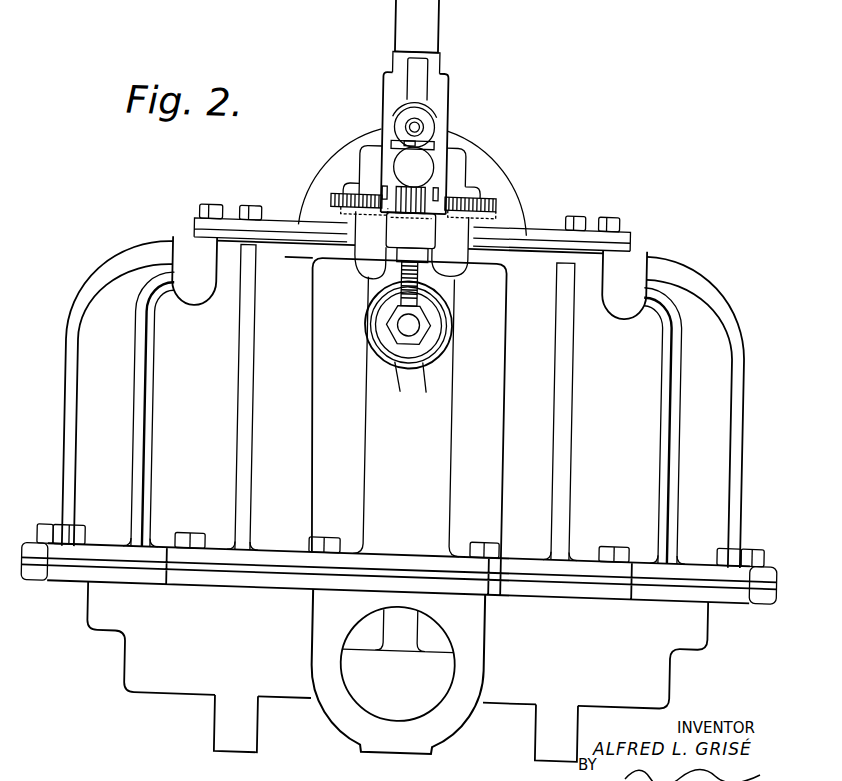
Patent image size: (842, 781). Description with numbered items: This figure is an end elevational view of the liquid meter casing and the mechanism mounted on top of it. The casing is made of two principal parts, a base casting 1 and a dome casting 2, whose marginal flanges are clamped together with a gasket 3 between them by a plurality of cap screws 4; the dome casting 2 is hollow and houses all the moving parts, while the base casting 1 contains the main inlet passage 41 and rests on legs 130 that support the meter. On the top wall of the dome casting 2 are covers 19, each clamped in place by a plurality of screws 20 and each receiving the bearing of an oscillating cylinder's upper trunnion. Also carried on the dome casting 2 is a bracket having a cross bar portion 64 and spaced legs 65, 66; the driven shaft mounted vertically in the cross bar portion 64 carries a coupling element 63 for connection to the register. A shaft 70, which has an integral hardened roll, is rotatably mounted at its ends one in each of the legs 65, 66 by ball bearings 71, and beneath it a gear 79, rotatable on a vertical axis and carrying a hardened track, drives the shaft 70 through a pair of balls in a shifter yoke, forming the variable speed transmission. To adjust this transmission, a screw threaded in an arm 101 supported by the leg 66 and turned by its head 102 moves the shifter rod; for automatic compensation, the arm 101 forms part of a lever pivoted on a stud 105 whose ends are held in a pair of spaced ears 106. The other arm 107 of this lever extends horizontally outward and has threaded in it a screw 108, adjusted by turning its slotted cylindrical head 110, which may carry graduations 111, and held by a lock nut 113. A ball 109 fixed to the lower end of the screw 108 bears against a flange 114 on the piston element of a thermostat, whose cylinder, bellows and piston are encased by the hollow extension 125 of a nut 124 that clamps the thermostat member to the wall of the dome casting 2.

The base casting 1 is at (703, 629).
The dome casting 2 is at (728, 386).
The gasket 3 is at (787, 578).
The cap screws 4 is at (324, 543).
The cover 19 is at (201, 229).
The screws 20 is at (254, 209).
The main inlet passage 41 is at (397, 672).
The coupling element 63 is at (406, 20).
The cross bar portion 64 is at (434, 67).
The leg 65 is at (355, 159).
The leg 66 is at (440, 92).
The shaft 70 is at (427, 125).
The ball bearings 71 is at (405, 117).
The gear 79 is at (337, 203).
The arm 101 is at (430, 147).
The head 102 is at (420, 168).
The stud 105 is at (474, 183).
The ears 106 is at (390, 191).
The arm 107 is at (407, 245).
The screw 108 is at (418, 277).
The ball 109 is at (419, 323).
The slotted cylindrical head 110 is at (411, 230).
The graduations 111 is at (402, 193).
The lock nut 113 is at (431, 256).
The flange 114 is at (431, 385).
The nut 124 is at (419, 350).
The hollow extension 125 is at (397, 336).
The legs 130 is at (270, 738).